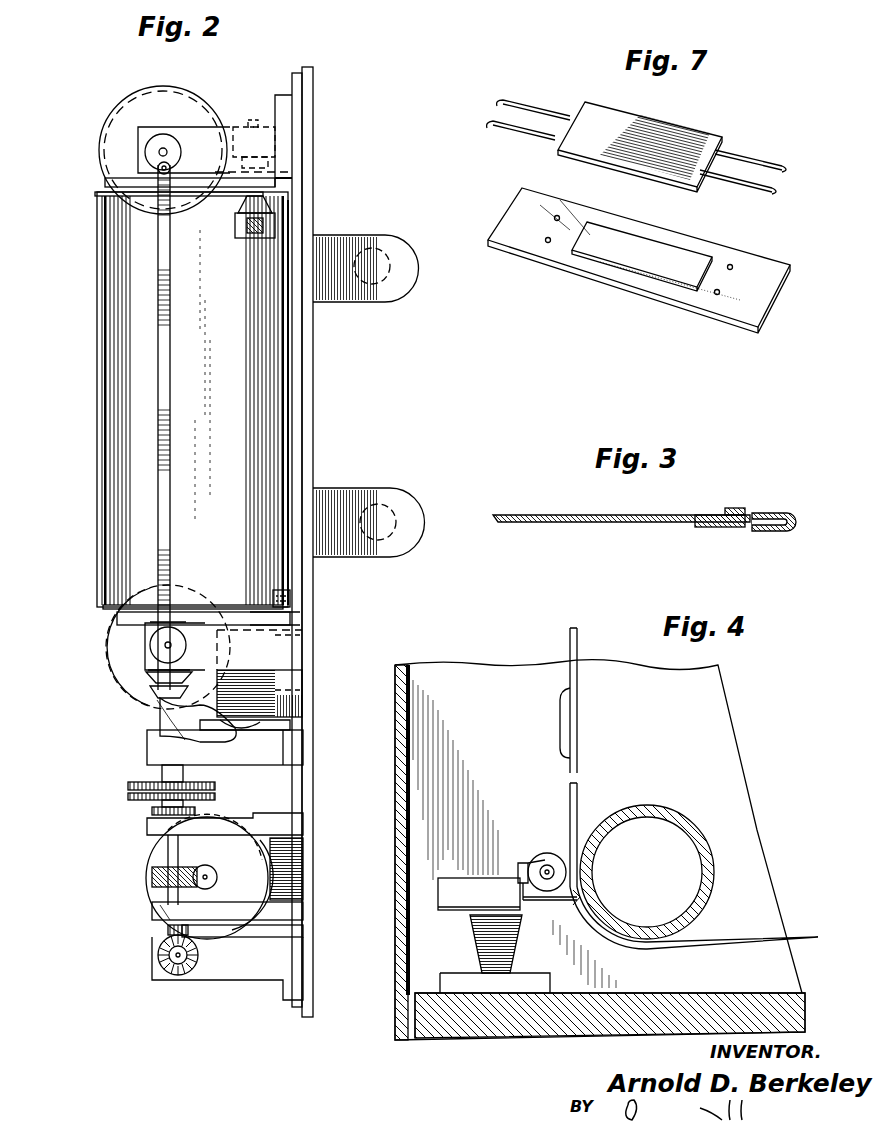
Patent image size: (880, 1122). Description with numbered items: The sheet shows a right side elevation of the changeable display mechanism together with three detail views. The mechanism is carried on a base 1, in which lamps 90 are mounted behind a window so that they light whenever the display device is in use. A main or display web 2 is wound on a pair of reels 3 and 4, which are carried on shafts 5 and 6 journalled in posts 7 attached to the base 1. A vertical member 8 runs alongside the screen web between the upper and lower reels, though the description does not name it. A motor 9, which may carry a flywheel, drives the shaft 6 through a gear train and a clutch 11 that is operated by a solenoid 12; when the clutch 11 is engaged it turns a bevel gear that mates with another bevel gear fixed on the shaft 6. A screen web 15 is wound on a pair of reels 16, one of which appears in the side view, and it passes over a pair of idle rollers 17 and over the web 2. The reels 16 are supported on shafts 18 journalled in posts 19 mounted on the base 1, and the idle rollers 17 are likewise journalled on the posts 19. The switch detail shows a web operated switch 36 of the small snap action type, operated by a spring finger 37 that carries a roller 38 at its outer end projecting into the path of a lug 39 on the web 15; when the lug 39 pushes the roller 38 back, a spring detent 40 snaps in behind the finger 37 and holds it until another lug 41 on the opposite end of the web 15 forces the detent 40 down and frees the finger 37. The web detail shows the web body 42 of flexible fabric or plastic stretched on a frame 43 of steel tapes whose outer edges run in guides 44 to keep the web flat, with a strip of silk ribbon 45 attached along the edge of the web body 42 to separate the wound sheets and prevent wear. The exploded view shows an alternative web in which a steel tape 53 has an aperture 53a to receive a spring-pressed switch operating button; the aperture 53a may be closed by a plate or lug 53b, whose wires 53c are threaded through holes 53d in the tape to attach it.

In FIG. 2, the base 1 is at (315, 368).
In FIG. 4, the base 1 is at (640, 997).
In FIG. 2, the display web 2 is at (100, 183).
In FIG. 2, the reel 3 is at (187, 92).
In FIG. 2, the reel 4 is at (115, 658).
In FIG. 2, the shaft 5 is at (178, 142).
In FIG. 2, the shaft 6 is at (150, 645).
In FIG. 2, the post 7 is at (280, 157).
In FIG. 2, the rack bar 8 is at (165, 435).
In FIG. 2, the motor 9 is at (145, 853).
In FIG. 2, the clutch 11 is at (153, 698).
In FIG. 2, the solenoid 12 is at (303, 708).
In FIG. 2, the screen web 15 is at (115, 517).
In FIG. 4, the screen web 15 is at (570, 632).
In FIG. 2, the reel 16 is at (253, 605).
In FIG. 2, the idle roller 17 is at (117, 603).
In FIG. 4, the idle roller 17 is at (655, 792).
In FIG. 2, the shaft 18 is at (280, 622).
In FIG. 2, the post 19 is at (122, 622).
In FIG. 4, the web operated switch 36 is at (472, 946).
In FIG. 4, the spring finger 37 is at (528, 862).
In FIG. 4, the roller 38 is at (545, 853).
In FIG. 4, the lug 39 is at (573, 900).
In FIG. 4, the spring detent 40 is at (537, 900).
In FIG. 4, the lug 41 is at (560, 703).
In FIG. 3, the web body 42 is at (547, 513).
In FIG. 3, the frame 43 is at (738, 528).
In FIG. 3, the guide 44 is at (782, 512).
In FIG. 3, the silk ribbon strip 45 is at (733, 510).
In FIG. 7, the steel tape 53 is at (717, 293).
In FIG. 7, the aperture 53a is at (632, 265).
In FIG. 7, the plate or lug 53b is at (677, 132).
In FIG. 7, the wires 53c is at (510, 102).
In FIG. 7, the holes 53d is at (545, 210).
In FIG. 2, the lamp 90 is at (382, 285).